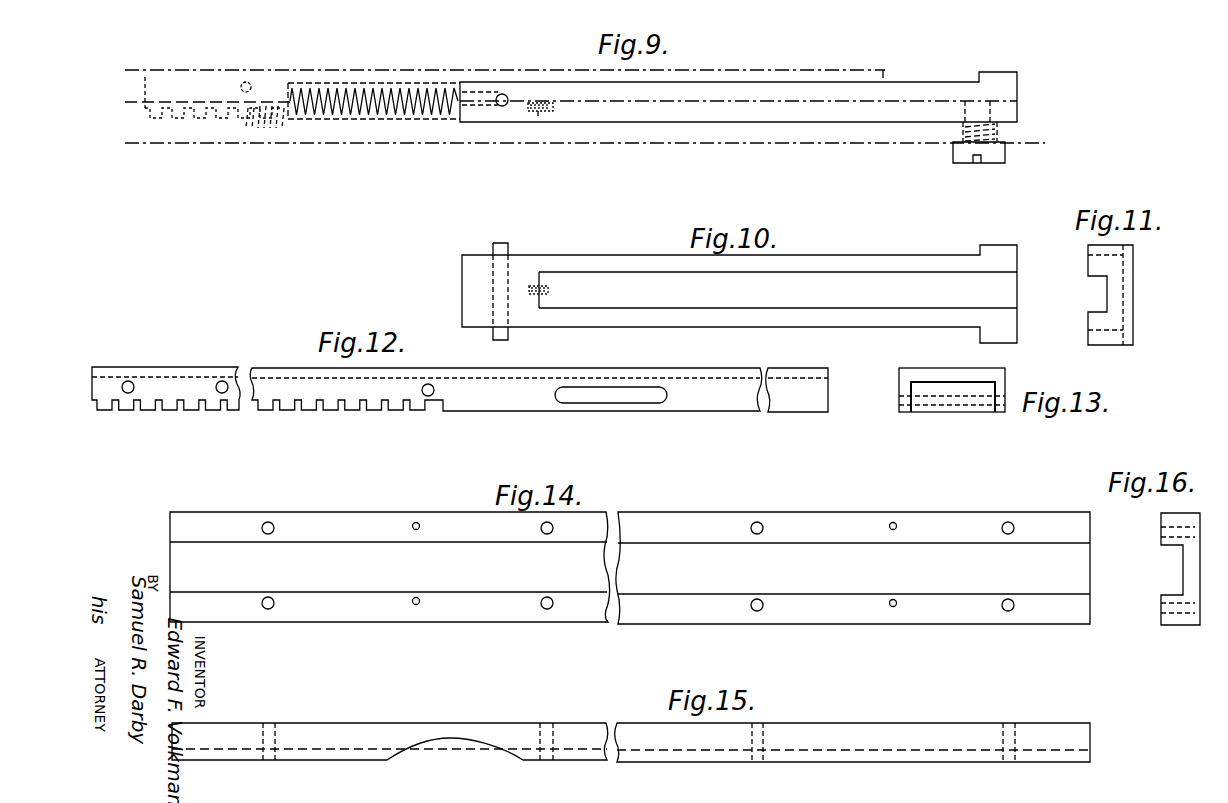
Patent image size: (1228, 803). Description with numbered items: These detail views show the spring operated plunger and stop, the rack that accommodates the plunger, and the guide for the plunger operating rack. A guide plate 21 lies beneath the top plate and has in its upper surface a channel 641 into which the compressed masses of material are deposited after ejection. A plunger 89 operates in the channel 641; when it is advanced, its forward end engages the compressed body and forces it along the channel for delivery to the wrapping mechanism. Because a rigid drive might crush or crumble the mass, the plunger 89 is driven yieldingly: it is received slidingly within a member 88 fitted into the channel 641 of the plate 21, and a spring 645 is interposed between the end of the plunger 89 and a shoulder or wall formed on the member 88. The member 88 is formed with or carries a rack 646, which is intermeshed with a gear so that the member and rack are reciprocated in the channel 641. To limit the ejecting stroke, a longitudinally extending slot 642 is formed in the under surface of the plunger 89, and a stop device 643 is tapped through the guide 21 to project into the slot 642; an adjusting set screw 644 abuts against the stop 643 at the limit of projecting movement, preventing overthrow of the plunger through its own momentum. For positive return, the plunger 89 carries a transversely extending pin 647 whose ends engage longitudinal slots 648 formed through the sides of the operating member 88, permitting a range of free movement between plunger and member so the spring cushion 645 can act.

In FIG. 9, the guide plate 21 is at (696, 146).
In FIG. 14, the guide plate 21 is at (737, 507).
In FIG. 15, the guide plate 21 is at (594, 717).
In FIG. 16, the guide plate 21 is at (1209, 605).
In FIG. 12, the operating member 88 is at (232, 360).
In FIG. 13, the operating member 88 is at (911, 360).
In FIG. 9, the plunger 89 is at (908, 80).
In FIG. 10, the plunger 89 is at (654, 251).
In FIG. 11, the plunger 89 is at (1135, 318).
In FIG. 14, the channel 641 is at (1108, 565).
In FIG. 16, the channel 641 is at (1175, 570).
In FIG. 9, the slot 642 is at (786, 122).
In FIG. 10, the slot 642 is at (815, 292).
In FIG. 11, the slot 642 is at (1104, 296).
In FIG. 9, the stop device 643 is at (996, 110).
In FIG. 9, the adjusting set screw 644 is at (561, 103).
In FIG. 10, the adjusting set screw 644 is at (552, 292).
In FIG. 9, the spring 645 is at (406, 120).
In FIG. 9, the rack 646 is at (232, 116).
In FIG. 12, the rack 646 is at (378, 412).
In FIG. 9, the pin 647 is at (500, 108).
In FIG. 10, the pin 647 is at (511, 247).
In FIG. 13, the pin 647 is at (942, 404).
In FIG. 12, the slot 648 is at (606, 404).